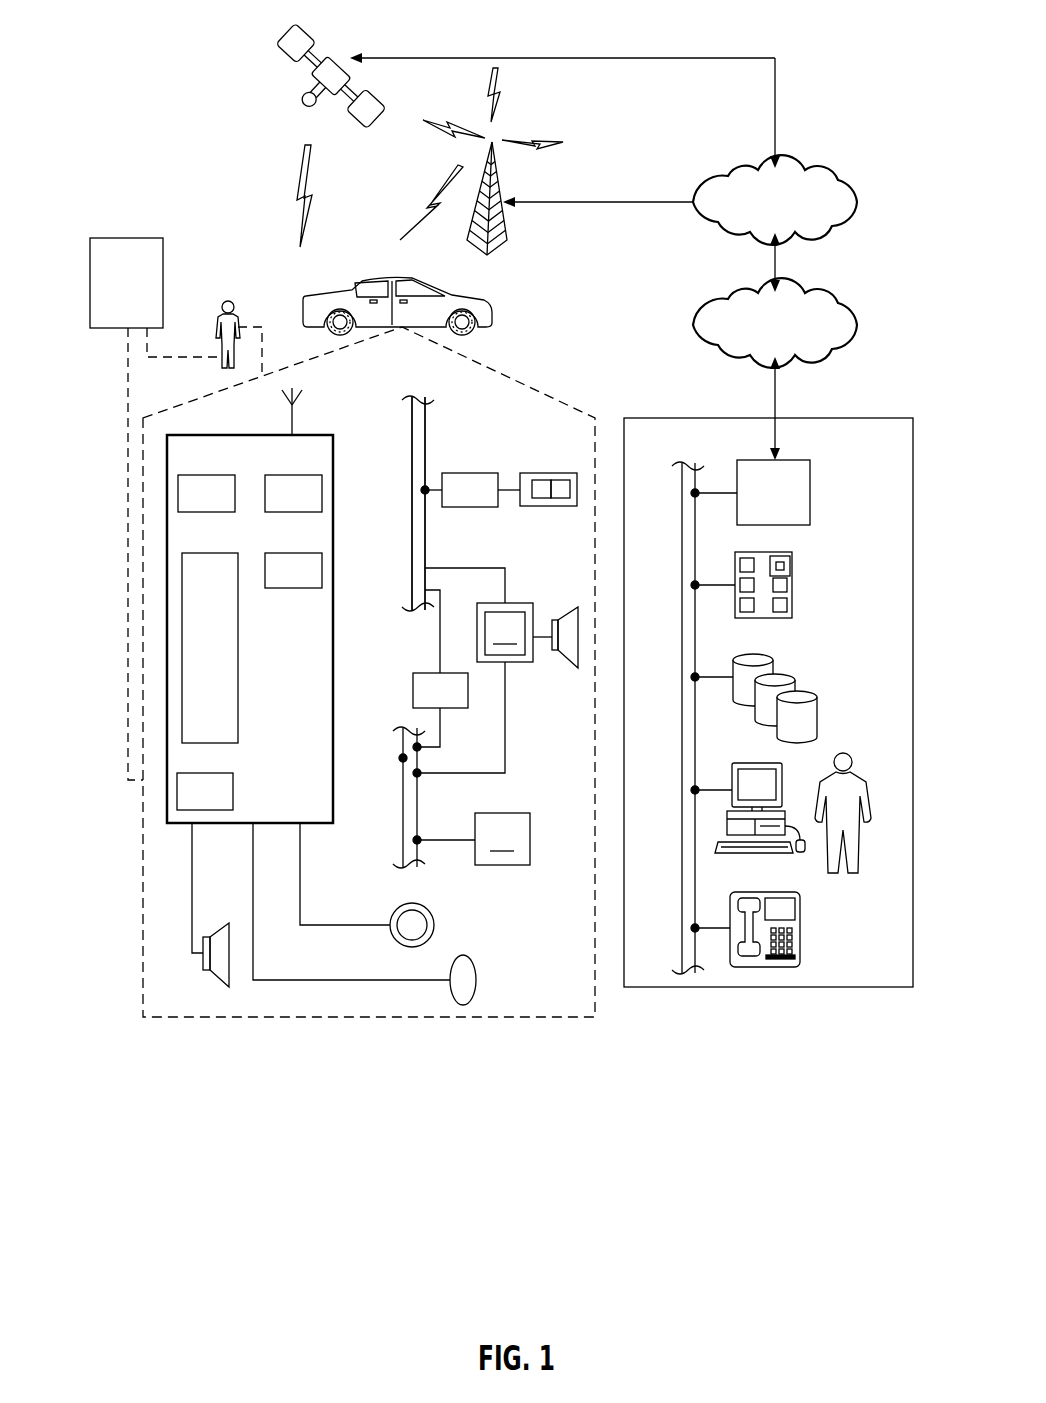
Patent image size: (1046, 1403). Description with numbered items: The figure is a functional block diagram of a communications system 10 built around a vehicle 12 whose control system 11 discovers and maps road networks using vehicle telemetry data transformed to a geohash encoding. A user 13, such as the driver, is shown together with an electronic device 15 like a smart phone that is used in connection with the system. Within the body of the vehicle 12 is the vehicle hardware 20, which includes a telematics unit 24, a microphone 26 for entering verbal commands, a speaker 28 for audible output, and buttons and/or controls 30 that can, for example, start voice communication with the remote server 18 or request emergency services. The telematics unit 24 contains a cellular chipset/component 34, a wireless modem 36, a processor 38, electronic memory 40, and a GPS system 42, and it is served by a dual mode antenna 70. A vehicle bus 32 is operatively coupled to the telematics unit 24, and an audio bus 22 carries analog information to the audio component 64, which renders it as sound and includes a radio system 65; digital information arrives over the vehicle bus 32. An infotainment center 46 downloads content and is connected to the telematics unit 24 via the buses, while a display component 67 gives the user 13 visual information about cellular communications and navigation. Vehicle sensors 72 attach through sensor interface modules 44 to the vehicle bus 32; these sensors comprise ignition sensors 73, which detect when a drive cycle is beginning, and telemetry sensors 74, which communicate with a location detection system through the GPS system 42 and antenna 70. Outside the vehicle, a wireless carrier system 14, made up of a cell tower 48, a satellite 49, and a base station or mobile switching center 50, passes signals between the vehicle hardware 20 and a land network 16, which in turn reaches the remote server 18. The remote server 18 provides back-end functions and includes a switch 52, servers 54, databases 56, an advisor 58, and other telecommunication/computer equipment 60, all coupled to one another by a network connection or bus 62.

The communications system 10 is at (196, 28).
The control system 11 is at (294, 599).
The vehicle 12 is at (367, 276).
The user 13 is at (228, 300).
The wireless carrier system 14 is at (822, 138).
The electronic device 15 is at (127, 238).
The land network 16 is at (820, 298).
The remote server 18 is at (860, 418).
The vehicle hardware 20 is at (500, 375).
The audio bus 22 is at (412, 545).
The telematics unit 24 is at (335, 705).
The microphone 26 is at (470, 957).
The speaker 28 is at (215, 982).
The buttons and/or controls 30 is at (423, 906).
The vehicle bus 32 is at (425, 545).
The cellular chipset/component 34 is at (227, 474).
The wireless modem 36 is at (312, 474).
The processor 38 is at (228, 552).
The memory 40 is at (233, 780).
The GPS system 42 is at (312, 552).
The sensor interface module 44 is at (470, 472).
The infotainment center 46 is at (420, 672).
The cell tower 48 is at (508, 223).
The satellite 49 is at (338, 60).
The base station and/or mobile switching center 50 is at (836, 179).
The switch 52 is at (792, 460).
The server 54 is at (792, 578).
The database 56 is at (802, 685).
The advisor 58 is at (853, 775).
The telecommunication/computer equipment 60 is at (800, 928).
The network connection or bus 62 is at (682, 722).
The audio component 64 is at (522, 662).
The radio system 65 is at (505, 632).
The display component 67 is at (502, 839).
The antenna 70 is at (292, 420).
The vehicle sensors 72 is at (546, 498).
The ignition sensor 73 is at (540, 497).
The telemetry sensor 74 is at (557, 498).